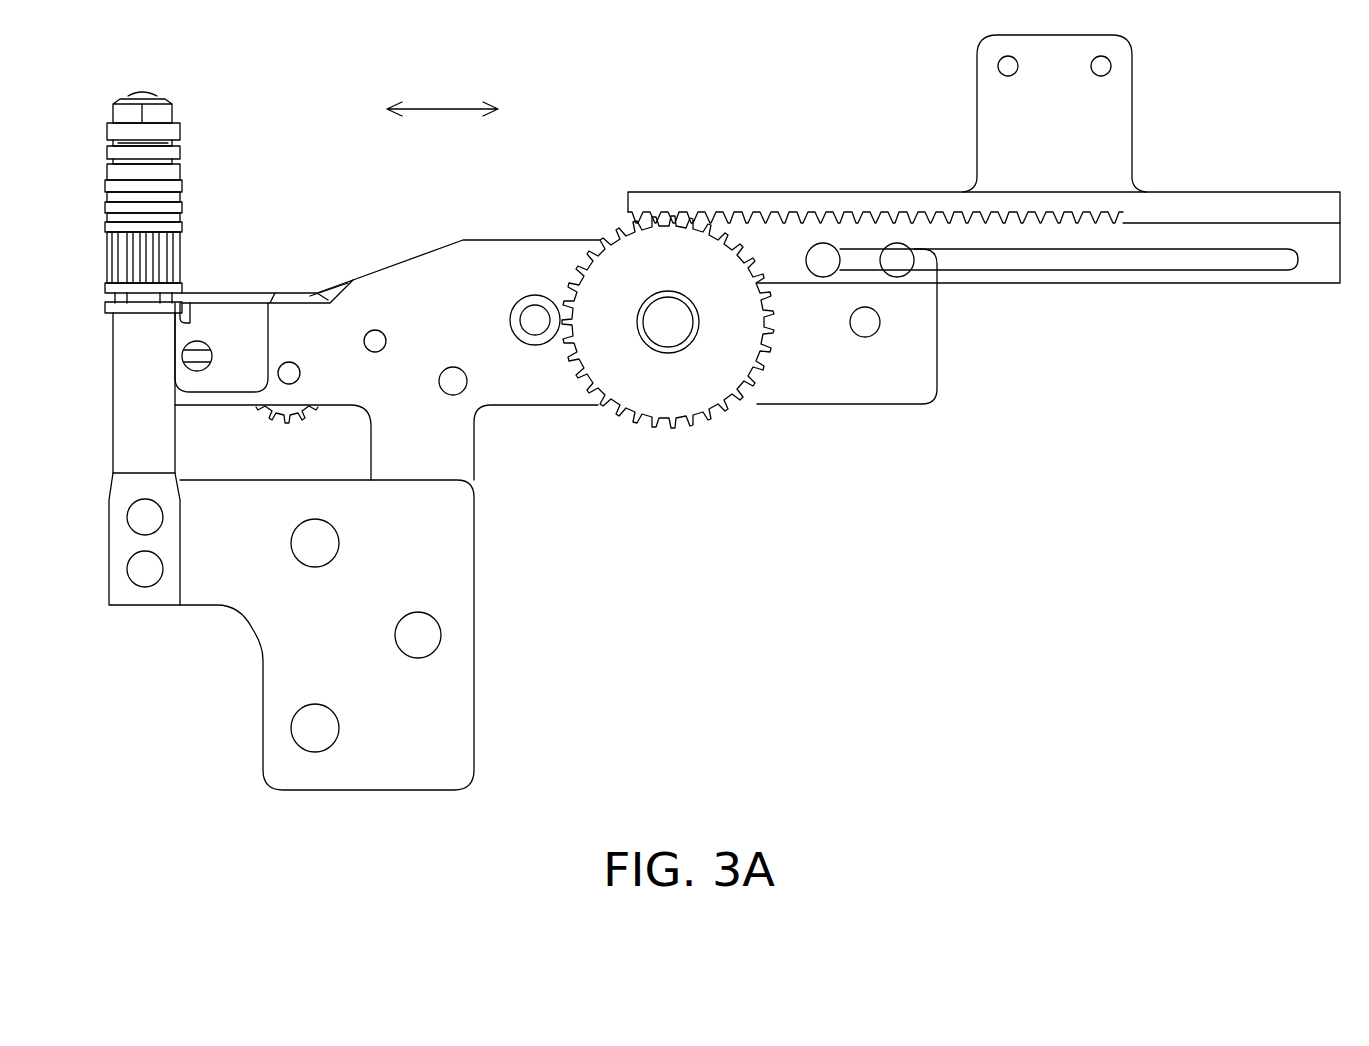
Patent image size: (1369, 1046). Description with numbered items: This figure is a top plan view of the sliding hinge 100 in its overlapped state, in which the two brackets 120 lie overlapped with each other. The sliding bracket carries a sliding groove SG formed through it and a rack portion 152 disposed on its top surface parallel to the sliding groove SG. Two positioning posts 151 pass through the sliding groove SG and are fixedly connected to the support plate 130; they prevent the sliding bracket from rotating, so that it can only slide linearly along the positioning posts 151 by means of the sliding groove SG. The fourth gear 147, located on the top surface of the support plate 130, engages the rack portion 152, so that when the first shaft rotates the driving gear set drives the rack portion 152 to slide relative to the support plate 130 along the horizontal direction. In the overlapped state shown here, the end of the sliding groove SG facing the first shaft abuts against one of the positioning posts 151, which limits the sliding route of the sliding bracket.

The sliding hinge 100 is at (1354, 762).
The brackets 120 is at (460, 676).
The support plate 130 is at (798, 386).
The fourth gear 147 is at (618, 278).
The positioning posts 151 is at (823, 262).
The rack portion 152 is at (742, 215).
The sliding groove SG is at (1235, 258).